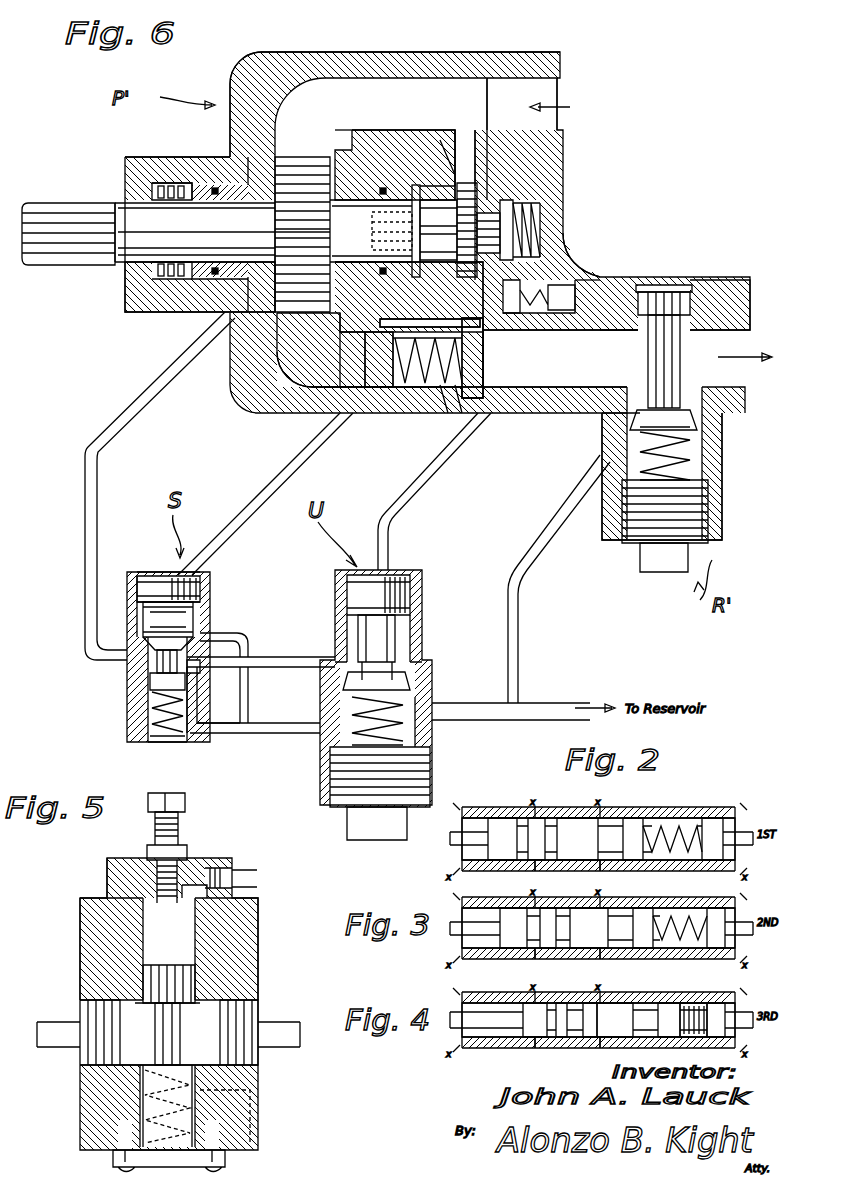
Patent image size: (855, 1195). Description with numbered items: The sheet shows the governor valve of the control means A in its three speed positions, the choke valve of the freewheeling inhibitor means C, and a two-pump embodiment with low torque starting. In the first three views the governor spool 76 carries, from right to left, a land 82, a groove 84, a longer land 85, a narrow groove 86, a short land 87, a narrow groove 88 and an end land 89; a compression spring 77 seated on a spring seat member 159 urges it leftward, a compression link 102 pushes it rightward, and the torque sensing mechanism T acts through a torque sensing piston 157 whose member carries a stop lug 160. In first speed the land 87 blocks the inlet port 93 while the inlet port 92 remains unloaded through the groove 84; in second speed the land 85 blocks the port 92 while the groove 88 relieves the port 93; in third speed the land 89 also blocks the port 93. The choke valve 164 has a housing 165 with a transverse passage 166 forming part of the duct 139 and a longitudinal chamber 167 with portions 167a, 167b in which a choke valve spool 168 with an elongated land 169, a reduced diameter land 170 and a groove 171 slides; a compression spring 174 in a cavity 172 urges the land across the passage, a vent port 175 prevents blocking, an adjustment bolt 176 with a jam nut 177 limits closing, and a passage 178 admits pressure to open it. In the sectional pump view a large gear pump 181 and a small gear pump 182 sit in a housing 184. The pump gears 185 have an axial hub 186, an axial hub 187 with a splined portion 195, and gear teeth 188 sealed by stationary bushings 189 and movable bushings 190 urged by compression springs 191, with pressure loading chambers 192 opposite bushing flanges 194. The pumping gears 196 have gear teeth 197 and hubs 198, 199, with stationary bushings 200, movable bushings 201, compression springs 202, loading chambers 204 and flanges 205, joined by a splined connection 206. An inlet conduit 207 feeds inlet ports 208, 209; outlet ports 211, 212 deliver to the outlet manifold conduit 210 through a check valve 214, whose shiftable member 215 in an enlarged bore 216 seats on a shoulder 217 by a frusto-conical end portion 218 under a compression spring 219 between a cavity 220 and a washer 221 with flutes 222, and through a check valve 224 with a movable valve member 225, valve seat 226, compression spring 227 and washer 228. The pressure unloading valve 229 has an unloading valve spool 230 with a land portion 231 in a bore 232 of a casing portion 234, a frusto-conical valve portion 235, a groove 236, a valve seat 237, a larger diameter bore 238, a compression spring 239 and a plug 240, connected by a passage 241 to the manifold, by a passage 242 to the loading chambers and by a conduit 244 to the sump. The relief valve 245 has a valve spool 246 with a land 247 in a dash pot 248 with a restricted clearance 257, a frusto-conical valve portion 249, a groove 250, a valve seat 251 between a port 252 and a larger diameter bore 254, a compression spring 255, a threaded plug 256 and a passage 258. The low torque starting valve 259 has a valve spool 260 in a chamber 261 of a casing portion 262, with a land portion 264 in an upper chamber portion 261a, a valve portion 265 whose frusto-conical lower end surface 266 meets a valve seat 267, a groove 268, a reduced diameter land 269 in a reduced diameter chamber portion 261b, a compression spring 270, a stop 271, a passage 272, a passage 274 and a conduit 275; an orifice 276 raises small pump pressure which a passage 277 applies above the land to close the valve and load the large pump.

In FIG. 2, the governor spool 76 is at (584, 810).
In FIG. 3, the governor spool 76 is at (660, 900).
In FIG. 4, the governor spool 76 is at (651, 994).
In FIG. 2, the compression spring 77 is at (670, 830).
In FIG. 3, the compression spring 77 is at (698, 918).
In FIG. 4, the compression spring 77 is at (700, 1005).
In FIG. 2, the land 82 is at (655, 862).
In FIG. 2, the groove 84 is at (628, 824).
In FIG. 2, the land 85 is at (588, 845).
In FIG. 3, the land 85 is at (598, 934).
In FIG. 4, the land 85 is at (623, 1027).
In FIG. 2, the groove 86 is at (552, 825).
In FIG. 2, the land 87 is at (533, 820).
In FIG. 2, the groove 88 is at (520, 823).
In FIG. 3, the groove 88 is at (535, 912).
In FIG. 2, the land 89 is at (512, 845).
In FIG. 3, the land 89 is at (522, 934).
In FIG. 4, the land 89 is at (545, 1027).
In FIG. 2, the inlet port 92 is at (600, 866).
In FIG. 3, the inlet port 92 is at (600, 955).
In FIG. 4, the inlet port 92 is at (600, 1045).
In FIG. 2, the inlet port 93 is at (533, 866).
In FIG. 3, the inlet port 93 is at (533, 955).
In FIG. 4, the inlet port 93 is at (533, 1045).
In FIG. 4, the compression link 102 is at (460, 1010).
In FIG. 5, the duct 139 is at (285, 1042).
In FIG. 4, the torque sensing piston 157 is at (740, 1010).
In FIG. 3, the spring seat member 159 is at (728, 915).
In FIG. 3, the stop lug 160 is at (720, 910).
In FIG. 5, the choke valve 164 is at (80, 908).
In FIG. 5, the housing 165 is at (250, 940).
In FIG. 5, the transverse passage 166 is at (250, 1012).
In FIG. 5, the longitudinal chamber 167 is at (145, 1058).
In FIG. 5, the chamber portion 167a is at (145, 1100).
In FIG. 5, the reduced diameter chamber portion 167b is at (145, 937).
In FIG. 5, the choke valve spool 168 is at (200, 1078).
In FIG. 5, the elongated land 169 is at (192, 1070).
In FIG. 5, the reduced diameter land 170 is at (168, 972).
In FIG. 5, the groove 171 is at (163, 1020).
In FIG. 5, the cavity 172 is at (140, 1088).
In FIG. 5, the compression spring 174 is at (232, 1097).
In FIG. 5, the vent port 175 is at (168, 1158).
In FIG. 5, the adjustment bolt 176 is at (186, 805).
In FIG. 5, the jam nut 177 is at (182, 848).
In FIG. 5, the passage 178 is at (242, 880).
In FIG. 6, the large capacity pressure loading gear pump 181 is at (306, 92).
In FIG. 6, the small capacity pressure loading gear pump 182 is at (466, 104).
In FIG. 6, the housing 184 is at (398, 60).
In FIG. 6, the pump gears 185 is at (293, 155).
In FIG. 6, the axial hub 186 is at (358, 217).
In FIG. 6, the axial hub 187 is at (185, 222).
In FIG. 6, the gear teeth 188 is at (278, 220).
In FIG. 6, the stationary pumping seal bushings 189 is at (370, 185).
In FIG. 6, the movable pumping seal bushings 190 is at (200, 313).
In FIG. 6, the compression springs 191 is at (168, 185).
In FIG. 6, the pressure loading chambers 192 is at (238, 144).
In FIG. 6, the bushing flanges 194 is at (270, 250).
In FIG. 6, the splined portion 195 is at (60, 262).
In FIG. 6, the pumping gears 196 is at (445, 175).
In FIG. 6, the gear teeth 197 is at (460, 216).
In FIG. 6, the hub 198 is at (535, 210).
In FIG. 6, the hub 199 is at (460, 234).
In FIG. 6, the stationary pumping seal bushings 200 is at (418, 200).
In FIG. 6, the movable pumping seal bushings 201 is at (506, 203).
In FIG. 6, the compression springs 202 is at (548, 240).
In FIG. 6, the pressure loading chambers 204 is at (485, 195).
In FIG. 6, the bushing flanges 205 is at (487, 190).
In FIG. 6, the splined connection 206 is at (370, 240).
In FIG. 6, the inlet conduit 207 is at (548, 85).
In FIG. 6, the inlet port 208 is at (328, 148).
In FIG. 6, the inlet port 209 is at (462, 125).
In FIG. 6, the outlet manifold conduit 210 is at (578, 388).
In FIG. 6, the outlet port 211 is at (276, 326).
In FIG. 6, the outlet port 212 is at (468, 300).
In FIG. 6, the check valve 214 is at (385, 428).
In FIG. 6, the shiftable member 215 is at (365, 362).
In FIG. 6, the enlarged bore 216 is at (440, 390).
In FIG. 6, the shoulder 217 is at (348, 330).
In FIG. 6, the frusto-conical end portion 218 is at (372, 413).
In FIG. 6, the compression spring 219 is at (460, 395).
In FIG. 6, the cavity 220 is at (393, 348).
In FIG. 6, the washer 221 is at (478, 413).
In FIG. 6, the flutes 222 is at (410, 312).
In FIG. 6, the check valve 224 is at (585, 252).
In FIG. 6, the movable valve member 225 is at (538, 315).
In FIG. 6, the valve seat 226 is at (510, 315).
In FIG. 6, the compression spring 227 is at (578, 280).
In FIG. 6, the washer 228 is at (565, 318).
In FIG. 6, the pressure unloading valve 229 is at (428, 578).
In FIG. 6, the unloading valve spool 230 is at (397, 625).
In FIG. 6, the land portion 231 is at (412, 585).
In FIG. 6, the bore 232 is at (412, 640).
In FIG. 6, the casing portion 234 is at (330, 772).
In FIG. 6, the frusto-conical valve portion 235 is at (424, 668).
In FIG. 6, the groove 236 is at (347, 620).
In FIG. 6, the valve seat 237 is at (343, 685).
In FIG. 6, the larger diameter bore 238 is at (432, 728).
In FIG. 6, the compression spring 239 is at (352, 712).
In FIG. 6, the plug 240 is at (370, 828).
In FIG. 6, the passage 241 is at (428, 488).
In FIG. 6, the passage 242 is at (85, 498).
In FIG. 6, the conduit 244 is at (552, 705).
In FIG. 6, the relief valve 245 is at (585, 462).
In FIG. 6, the valve spool 246 is at (705, 290).
In FIG. 6, the land 247 is at (675, 290).
In FIG. 6, the dash pot 248 is at (650, 283).
In FIG. 6, the frusto-conical valve portion 249 is at (700, 418).
In FIG. 6, the groove 250 is at (682, 340).
In FIG. 6, the valve seat 251 is at (692, 405).
In FIG. 6, the port 252 is at (636, 400).
In FIG. 6, the larger diameter bore 254 is at (692, 446).
In FIG. 6, the compression spring 255 is at (692, 464).
In FIG. 6, the threaded plug 256 is at (648, 560).
In FIG. 6, the restricted clearance 257 is at (612, 318).
In FIG. 6, the passage 258 is at (548, 545).
In FIG. 6, the low torque starting valve 259 is at (103, 582).
In FIG. 6, the valve spool 260 is at (143, 620).
In FIG. 6, the chamber 261 is at (200, 615).
In FIG. 6, the upper chamber portion 261a is at (143, 642).
In FIG. 6, the reduced diameter chamber portion 261b is at (150, 707).
In FIG. 6, the casing portion 262 is at (137, 578).
In FIG. 6, the land portion 264 is at (202, 585).
In FIG. 6, the valve portion 265 is at (137, 606).
In FIG. 6, the frusto-conical lower end surface 266 is at (200, 640).
In FIG. 6, the valve seat 267 is at (196, 665).
In FIG. 6, the groove 268 is at (157, 660).
In FIG. 6, the reduced diameter land 269 is at (150, 680).
In FIG. 6, the compression spring 270 is at (148, 730).
In FIG. 6, the stop 271 is at (178, 575).
In FIG. 6, the passage 272 is at (250, 640).
In FIG. 6, the passage 274 is at (285, 735).
In FIG. 6, the conduit 275 is at (232, 735).
In FIG. 6, the orifice 276 is at (488, 265).
In FIG. 6, the passage 277 is at (282, 476).
In FIG. 2, the control means A is at (715, 810).
In FIG. 2, the torque sensing mechanism T is at (752, 828).
In FIG. 5, the freewheeling inhibitor means C is at (262, 895).